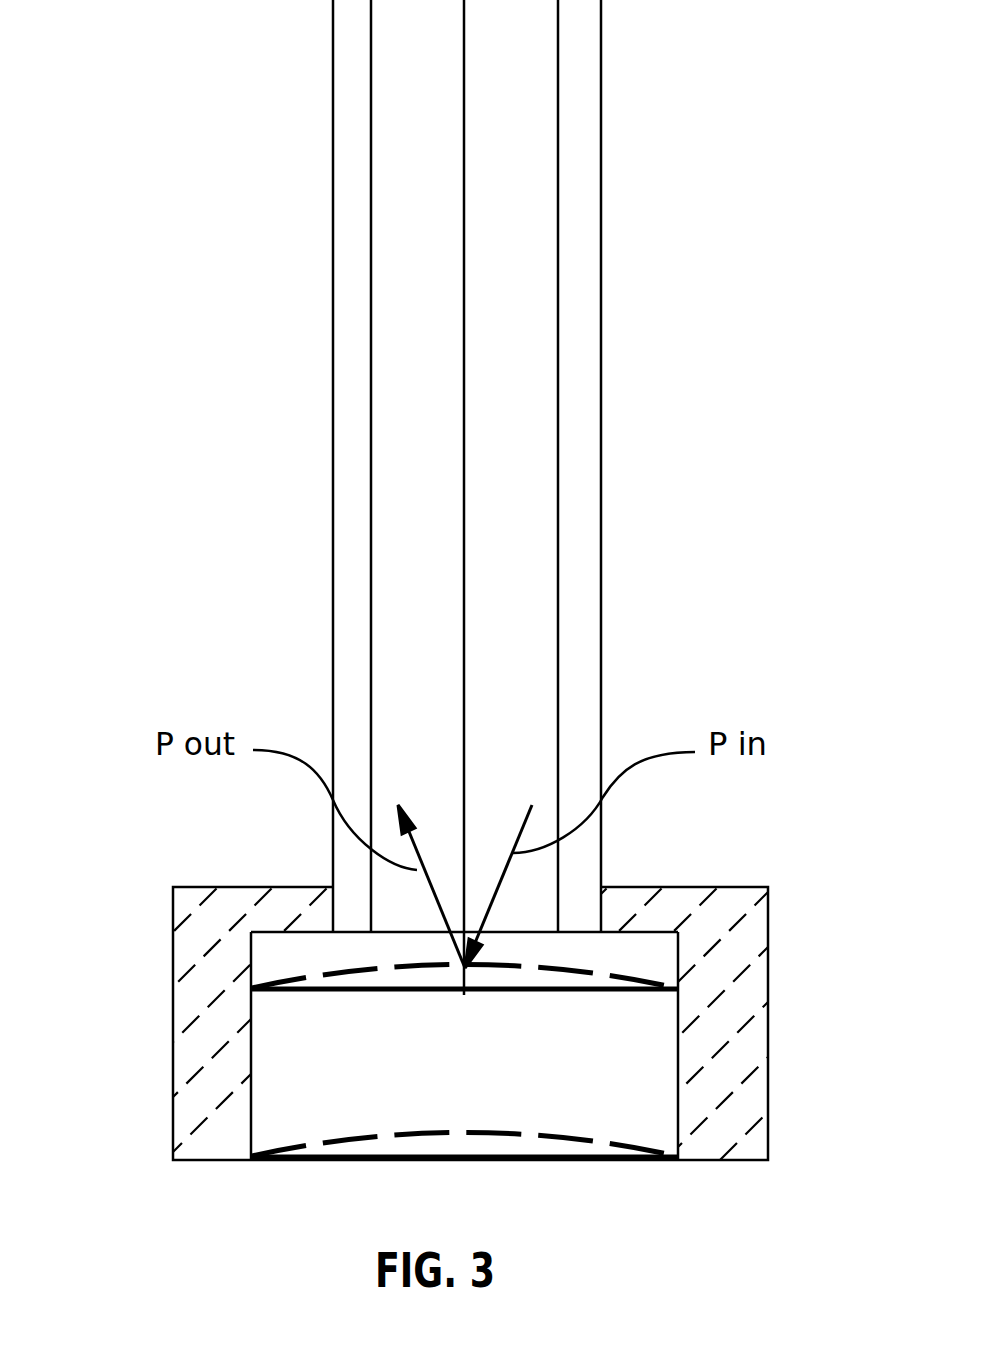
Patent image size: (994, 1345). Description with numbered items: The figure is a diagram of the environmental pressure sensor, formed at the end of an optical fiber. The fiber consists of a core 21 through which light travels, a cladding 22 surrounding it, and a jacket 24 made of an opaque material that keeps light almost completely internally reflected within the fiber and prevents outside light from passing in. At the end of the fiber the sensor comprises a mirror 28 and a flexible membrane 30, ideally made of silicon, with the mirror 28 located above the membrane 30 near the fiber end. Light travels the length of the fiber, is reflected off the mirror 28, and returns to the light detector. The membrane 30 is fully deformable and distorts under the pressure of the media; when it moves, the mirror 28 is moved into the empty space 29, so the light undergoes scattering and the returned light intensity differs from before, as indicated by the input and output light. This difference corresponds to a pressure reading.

The core 21 is at (464, 138).
The cladding 22 is at (550, 252).
The jacket 24 is at (601, 410).
The mirror 28 is at (400, 993).
The empty space 29 is at (248, 940).
The flexible membrane 30 is at (310, 1147).